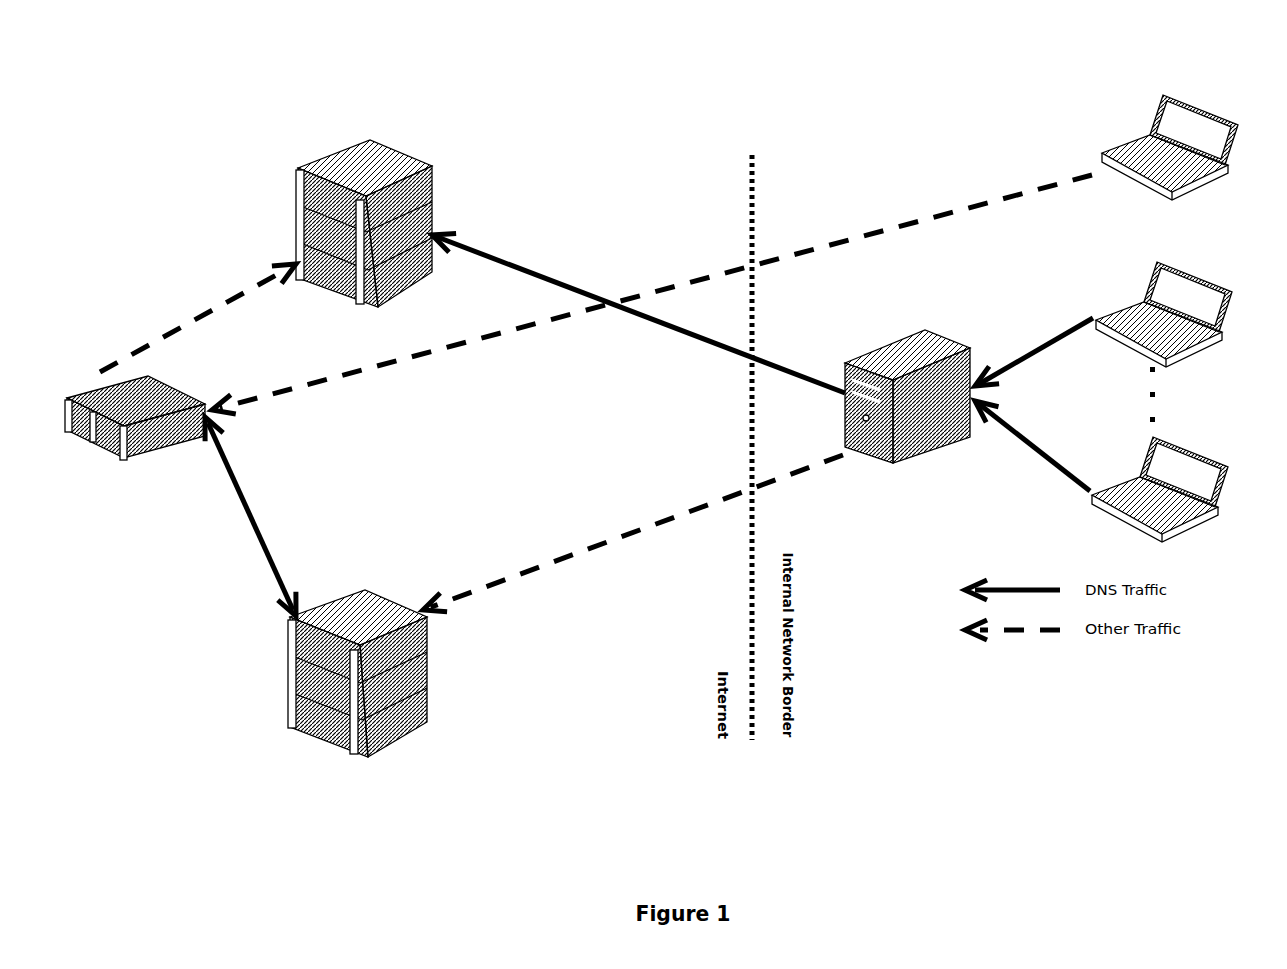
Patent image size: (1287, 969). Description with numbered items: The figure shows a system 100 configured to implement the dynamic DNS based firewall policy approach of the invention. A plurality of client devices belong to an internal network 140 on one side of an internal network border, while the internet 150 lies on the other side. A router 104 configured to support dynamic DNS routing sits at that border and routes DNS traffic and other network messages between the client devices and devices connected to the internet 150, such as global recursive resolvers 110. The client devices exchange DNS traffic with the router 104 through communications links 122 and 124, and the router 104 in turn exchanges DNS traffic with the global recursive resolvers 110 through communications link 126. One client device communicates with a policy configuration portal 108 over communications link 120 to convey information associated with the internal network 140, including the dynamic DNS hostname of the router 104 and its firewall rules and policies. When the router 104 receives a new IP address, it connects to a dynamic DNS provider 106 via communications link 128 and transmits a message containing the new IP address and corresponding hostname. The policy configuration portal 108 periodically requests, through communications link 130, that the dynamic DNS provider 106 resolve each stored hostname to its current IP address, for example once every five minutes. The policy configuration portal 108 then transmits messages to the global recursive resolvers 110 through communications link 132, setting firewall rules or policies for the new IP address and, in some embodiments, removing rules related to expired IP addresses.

The system 100 is at (742, 60).
The router 104 is at (918, 462).
The dynamic DNS provider 106 is at (292, 700).
The policy configuration portal 108 is at (172, 384).
The global recursive resolvers 110 is at (345, 300).
The communications link 120 is at (1005, 196).
The communications link 122 is at (1071, 333).
The communications link 124 is at (1050, 460).
The communications link 126 is at (656, 325).
The communications link 128 is at (586, 553).
The communications link 130 is at (268, 590).
The communications link 132 is at (262, 295).
The internal network 140 is at (977, 90).
The internet 150 is at (498, 90).